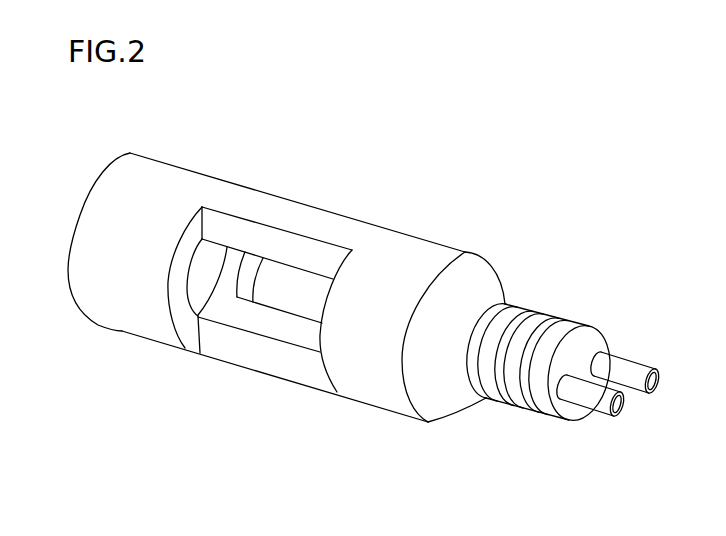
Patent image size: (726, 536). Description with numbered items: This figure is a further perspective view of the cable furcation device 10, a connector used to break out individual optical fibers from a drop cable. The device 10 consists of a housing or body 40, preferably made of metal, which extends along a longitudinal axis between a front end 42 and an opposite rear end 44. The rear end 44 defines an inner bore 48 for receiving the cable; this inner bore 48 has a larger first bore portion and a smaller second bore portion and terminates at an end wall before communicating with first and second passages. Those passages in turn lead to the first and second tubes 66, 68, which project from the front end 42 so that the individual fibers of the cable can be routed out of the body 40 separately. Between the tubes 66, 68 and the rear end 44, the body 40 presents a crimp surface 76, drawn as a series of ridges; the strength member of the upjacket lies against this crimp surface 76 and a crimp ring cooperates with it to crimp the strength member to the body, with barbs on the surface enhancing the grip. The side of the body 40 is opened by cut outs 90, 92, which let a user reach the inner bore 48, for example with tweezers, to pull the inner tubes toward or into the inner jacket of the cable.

The cable furcation device 10 is at (341, 136).
The housing body 40 is at (161, 161).
The rear end 44 is at (70, 231).
The inner bore 48 is at (219, 305).
The cut out 90 is at (275, 308).
The cut out 92 is at (270, 358).
The crimp surface 76 is at (557, 318).
The first tube 66 is at (642, 364).
The second tube 68 is at (606, 417).
The front end 42 is at (657, 389).